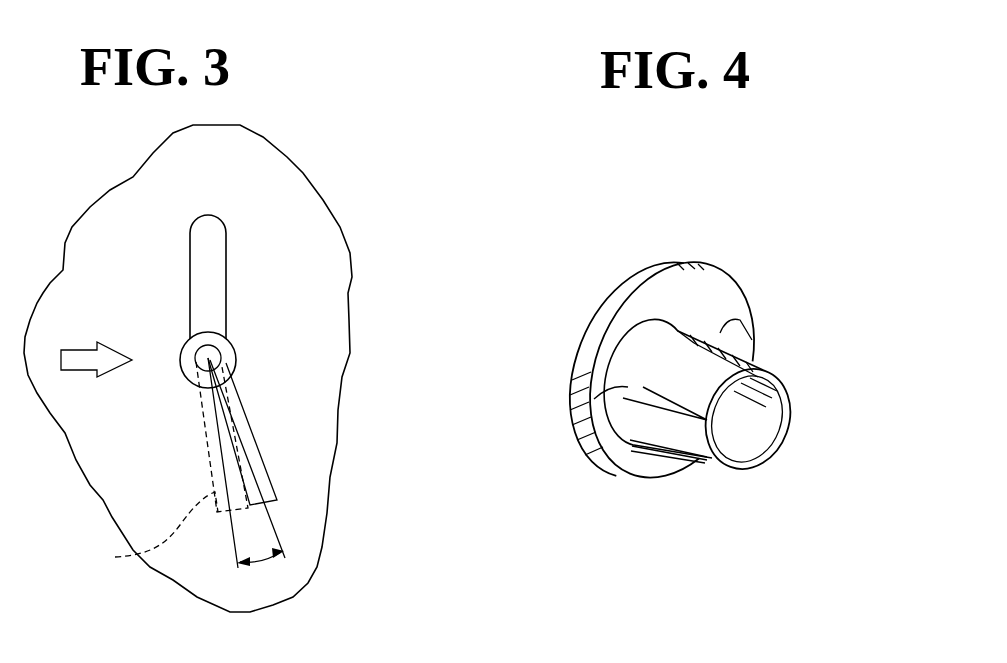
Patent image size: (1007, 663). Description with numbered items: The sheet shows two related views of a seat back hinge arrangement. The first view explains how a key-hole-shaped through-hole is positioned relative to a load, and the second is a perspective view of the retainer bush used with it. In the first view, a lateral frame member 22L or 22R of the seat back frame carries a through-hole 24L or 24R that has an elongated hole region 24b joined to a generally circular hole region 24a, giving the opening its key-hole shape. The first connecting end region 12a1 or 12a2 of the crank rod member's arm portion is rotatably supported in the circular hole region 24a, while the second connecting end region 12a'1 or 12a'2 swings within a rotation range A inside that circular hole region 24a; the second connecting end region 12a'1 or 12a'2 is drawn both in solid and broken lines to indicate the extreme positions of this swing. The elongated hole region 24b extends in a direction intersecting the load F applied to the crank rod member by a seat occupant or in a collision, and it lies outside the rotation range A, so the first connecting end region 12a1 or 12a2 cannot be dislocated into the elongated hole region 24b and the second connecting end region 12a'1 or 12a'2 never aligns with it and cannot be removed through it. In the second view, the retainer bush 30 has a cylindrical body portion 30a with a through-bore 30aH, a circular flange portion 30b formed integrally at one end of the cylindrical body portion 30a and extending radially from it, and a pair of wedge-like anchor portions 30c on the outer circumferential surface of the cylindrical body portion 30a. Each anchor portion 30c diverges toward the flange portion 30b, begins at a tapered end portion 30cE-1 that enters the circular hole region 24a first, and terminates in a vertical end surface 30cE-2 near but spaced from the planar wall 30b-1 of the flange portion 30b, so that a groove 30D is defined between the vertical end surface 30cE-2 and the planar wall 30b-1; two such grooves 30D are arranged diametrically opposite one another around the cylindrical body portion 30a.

In FIG. 3, the left lateral frame member 22L is at (252, 368).
In FIG. 3, the right lateral frame member 22R is at (297, 187).
In FIG. 3, the left through-hole 24L is at (299, 293).
In FIG. 3, the right through-hole 24R is at (299, 293).
In FIG. 3, the generally circular hole region 24a is at (238, 343).
In FIG. 3, the elongated hole region 24b is at (205, 247).
In FIG. 3, the first connecting end region 12a1 is at (147, 406).
In FIG. 3, the first connecting end region 12a2 is at (200, 358).
In FIG. 3, the second connecting end region 12a'1 is at (230, 491).
In FIG. 3, the second connecting end region 12a'2 is at (230, 491).
In FIG. 3, the rotation range A is at (246, 463).
In FIG. 3, the load F is at (81, 359).
In FIG. 4, the retainer bush 30 is at (672, 382).
In FIG. 4, the cylindrical body portion 30a is at (672, 387).
In FIG. 4, the through-bore 30aH is at (742, 433).
In FIG. 4, the circular flange portion 30b is at (628, 351).
In FIG. 4, the planar wall 30b-1 is at (655, 308).
In FIG. 4, the wedge-like anchor portion 30c is at (757, 350).
In FIG. 4, the tapered end portion 30cE-1 is at (765, 362).
In FIG. 4, the vertical end surface 30cE-2 is at (727, 335).
In FIG. 4, the groove 30D is at (722, 333).